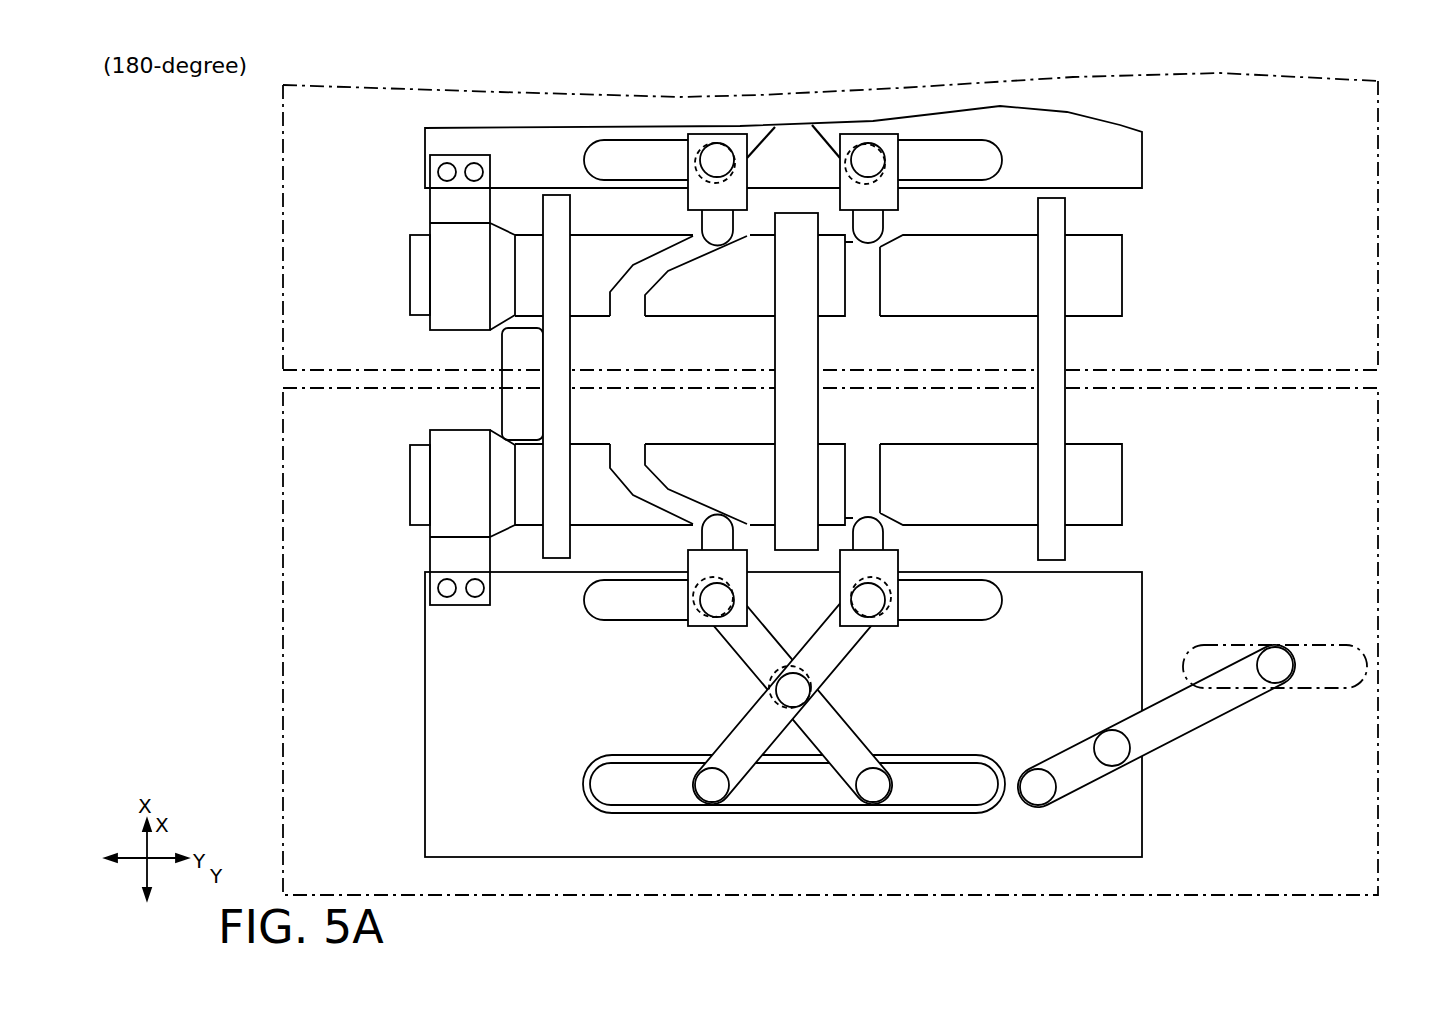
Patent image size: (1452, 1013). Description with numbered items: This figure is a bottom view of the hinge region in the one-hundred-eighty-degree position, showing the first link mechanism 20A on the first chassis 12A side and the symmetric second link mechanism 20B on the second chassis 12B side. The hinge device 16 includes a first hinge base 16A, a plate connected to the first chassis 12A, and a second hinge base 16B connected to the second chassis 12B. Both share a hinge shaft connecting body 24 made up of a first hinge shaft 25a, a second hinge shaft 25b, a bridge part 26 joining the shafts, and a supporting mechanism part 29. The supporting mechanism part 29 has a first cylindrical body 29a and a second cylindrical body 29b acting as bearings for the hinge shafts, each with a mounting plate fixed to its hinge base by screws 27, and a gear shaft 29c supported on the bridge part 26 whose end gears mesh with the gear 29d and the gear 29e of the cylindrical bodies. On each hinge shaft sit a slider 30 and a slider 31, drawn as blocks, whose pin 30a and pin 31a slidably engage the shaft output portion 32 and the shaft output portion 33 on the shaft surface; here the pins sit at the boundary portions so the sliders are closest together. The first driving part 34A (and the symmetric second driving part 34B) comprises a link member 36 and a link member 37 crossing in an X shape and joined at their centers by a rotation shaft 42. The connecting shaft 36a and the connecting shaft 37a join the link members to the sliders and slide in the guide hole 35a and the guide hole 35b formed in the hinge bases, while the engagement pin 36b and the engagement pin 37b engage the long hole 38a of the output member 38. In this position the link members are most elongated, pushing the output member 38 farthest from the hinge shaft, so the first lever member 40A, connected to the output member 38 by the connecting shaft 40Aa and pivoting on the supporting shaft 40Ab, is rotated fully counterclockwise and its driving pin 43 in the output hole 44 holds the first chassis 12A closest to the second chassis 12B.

The first chassis 12A is at (282, 427).
The second chassis 12B is at (282, 284).
The hinge device 16 is at (422, 430).
The first hinge base 16A is at (470, 835).
The second hinge base 16B is at (557, 145).
The first link mechanism 20A is at (358, 702).
The second link mechanism 20B is at (338, 124).
The hinge shaft connecting body 24 is at (1145, 305).
The first hinge shaft 25a is at (420, 450).
The second hinge shaft 25b is at (420, 280).
The bridge part 26 is at (582, 213).
The screws 27 is at (474, 163).
The supporting mechanism part 29 is at (400, 305).
The first cylindrical body 29a is at (427, 574).
The second cylindrical body 29b is at (460, 240).
The gear shaft 29c is at (517, 413).
The gear 29d is at (503, 500).
The gear 29e is at (632, 256).
The slider 30 is at (700, 138).
The pin 30a is at (460, 243).
The slider 31 is at (888, 150).
The pin 31a is at (868, 225).
The shaft output portion 32 is at (517, 413).
The shaft output portion 33 is at (855, 297).
The first driving part 34A is at (1028, 688).
The second driving part 34B is at (917, 126).
The guide hole 35a is at (609, 150).
The guide hole 35b is at (940, 140).
The link member 36 is at (757, 150).
The connecting shaft 36a is at (717, 160).
The engagement pin 36b is at (876, 795).
The link member 37 is at (866, 130).
The connecting shaft 37a is at (868, 160).
The engagement pin 37b is at (713, 797).
The output member 38 is at (768, 810).
The long hole 38a is at (638, 806).
The first lever member 40A is at (1172, 717).
The connecting shaft 40Aa is at (1040, 790).
The supporting shaft 40Ab is at (1112, 752).
The rotation shaft 42 is at (793, 700).
The driving pin 43 is at (1275, 680).
The output hole 44 is at (1312, 679).